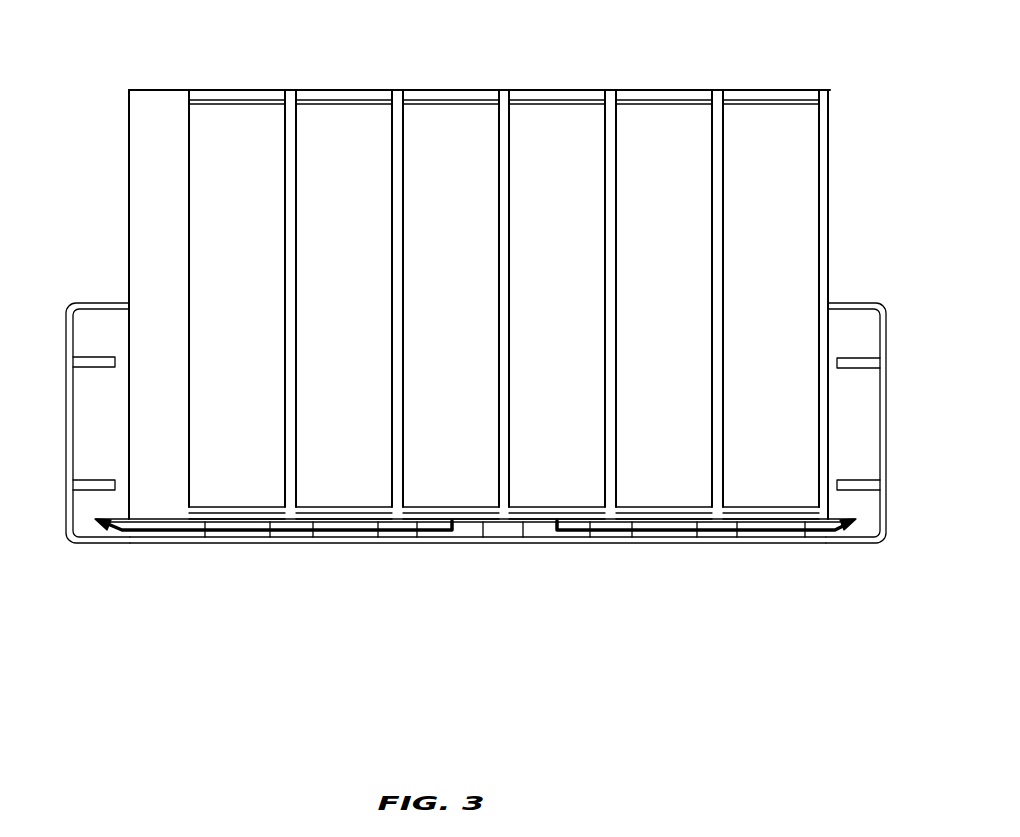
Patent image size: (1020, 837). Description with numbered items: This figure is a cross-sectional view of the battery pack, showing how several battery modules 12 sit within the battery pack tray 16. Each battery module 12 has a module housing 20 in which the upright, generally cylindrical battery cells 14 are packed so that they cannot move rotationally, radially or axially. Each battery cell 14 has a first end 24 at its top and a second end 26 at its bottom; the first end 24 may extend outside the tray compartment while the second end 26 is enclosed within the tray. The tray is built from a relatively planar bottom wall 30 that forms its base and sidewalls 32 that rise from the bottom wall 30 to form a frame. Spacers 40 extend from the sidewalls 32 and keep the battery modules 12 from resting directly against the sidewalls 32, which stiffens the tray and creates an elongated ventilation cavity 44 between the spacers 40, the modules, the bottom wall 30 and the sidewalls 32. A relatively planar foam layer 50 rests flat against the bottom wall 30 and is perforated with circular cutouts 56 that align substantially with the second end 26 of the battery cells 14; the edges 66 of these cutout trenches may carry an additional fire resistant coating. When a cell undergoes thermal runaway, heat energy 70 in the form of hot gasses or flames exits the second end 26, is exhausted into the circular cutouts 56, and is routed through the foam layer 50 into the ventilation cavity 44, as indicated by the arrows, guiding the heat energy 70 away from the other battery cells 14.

The battery module 12 is at (129, 90).
The battery cell 14 is at (771, 132).
The battery pack tray 16 is at (880, 542).
The module housing 20 is at (143, 174).
The first end 24 is at (237, 114).
The second end 26 is at (210, 483).
The bottom wall 30 is at (289, 545).
The sidewall 32 is at (66, 413).
The spacer 40 is at (95, 355).
The ventilation cavity 44 is at (95, 519).
The foam layer 50 is at (110, 527).
The circular cutout 56 is at (348, 535).
The edge 66 is at (264, 540).
The heat energy 70 is at (388, 532).